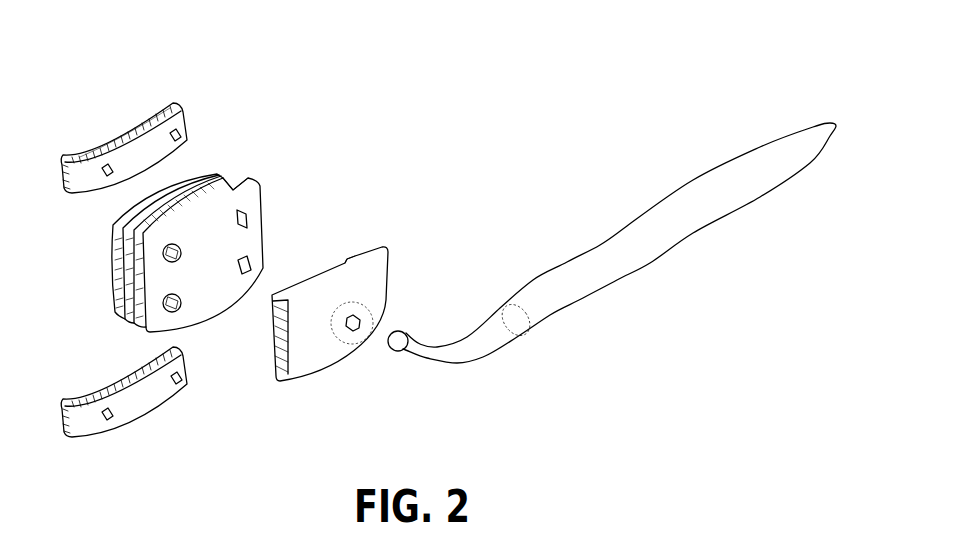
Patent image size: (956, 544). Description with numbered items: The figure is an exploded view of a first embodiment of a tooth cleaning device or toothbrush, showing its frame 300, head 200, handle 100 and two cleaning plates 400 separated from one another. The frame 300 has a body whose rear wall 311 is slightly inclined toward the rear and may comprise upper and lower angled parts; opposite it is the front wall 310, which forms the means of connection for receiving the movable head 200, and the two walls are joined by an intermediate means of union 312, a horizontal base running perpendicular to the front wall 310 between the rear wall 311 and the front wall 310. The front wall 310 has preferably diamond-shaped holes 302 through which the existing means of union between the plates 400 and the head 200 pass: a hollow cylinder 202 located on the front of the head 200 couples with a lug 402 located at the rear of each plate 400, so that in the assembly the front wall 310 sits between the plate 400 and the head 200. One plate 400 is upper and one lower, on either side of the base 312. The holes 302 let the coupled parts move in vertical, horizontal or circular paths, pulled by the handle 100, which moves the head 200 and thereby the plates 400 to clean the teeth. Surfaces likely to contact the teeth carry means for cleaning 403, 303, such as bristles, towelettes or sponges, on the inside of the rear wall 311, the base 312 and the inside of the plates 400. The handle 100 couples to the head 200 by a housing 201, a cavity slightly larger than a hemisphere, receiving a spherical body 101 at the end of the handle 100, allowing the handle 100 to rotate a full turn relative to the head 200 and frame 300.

The handle 100 is at (595, 267).
The spherical body 101 is at (399, 346).
The head 200 is at (370, 278).
The housing 201 is at (367, 313).
The hollow cylinder 202 is at (350, 262).
The frame 300 is at (192, 233).
The holes 302 is at (264, 207).
The means for cleaning the teeth 303 is at (233, 188).
The front wall 310 is at (140, 322).
The rear wall 311 is at (112, 258).
The intermediate means of union 312 is at (112, 282).
The plate 400 is at (187, 108).
The lug 402 is at (176, 133).
The means for cleaning 403 is at (148, 118).